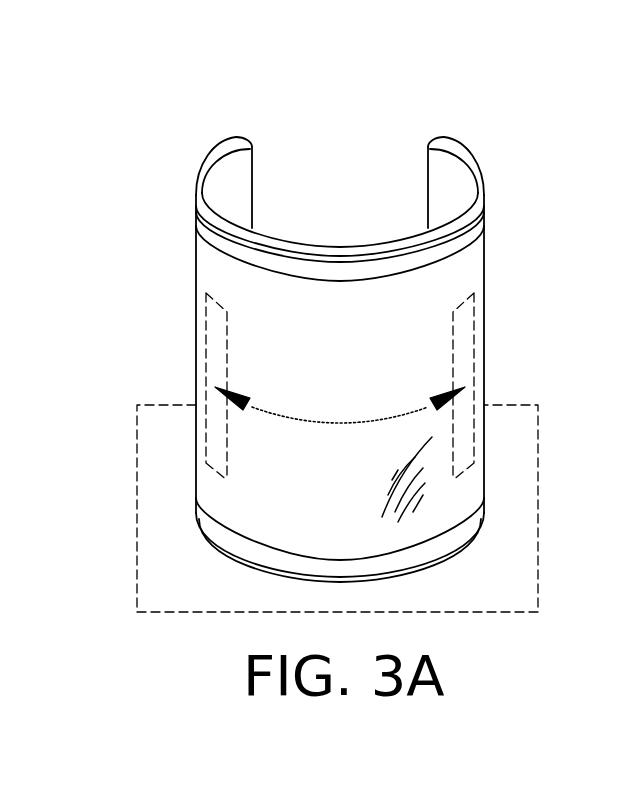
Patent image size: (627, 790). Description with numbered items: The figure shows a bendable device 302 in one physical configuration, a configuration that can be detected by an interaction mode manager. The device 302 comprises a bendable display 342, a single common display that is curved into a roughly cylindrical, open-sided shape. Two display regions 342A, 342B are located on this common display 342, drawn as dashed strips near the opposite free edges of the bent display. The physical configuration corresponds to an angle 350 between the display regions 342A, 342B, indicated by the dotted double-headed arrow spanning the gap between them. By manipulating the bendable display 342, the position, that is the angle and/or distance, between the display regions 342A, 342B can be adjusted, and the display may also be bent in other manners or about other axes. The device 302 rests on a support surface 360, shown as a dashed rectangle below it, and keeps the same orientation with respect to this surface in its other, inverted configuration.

The device 302 is at (328, 329).
The bendable display 342 is at (353, 333).
The display region 342A is at (213, 346).
The display region 342B is at (461, 346).
The angle 350 is at (321, 424).
The support surface 360 is at (203, 593).